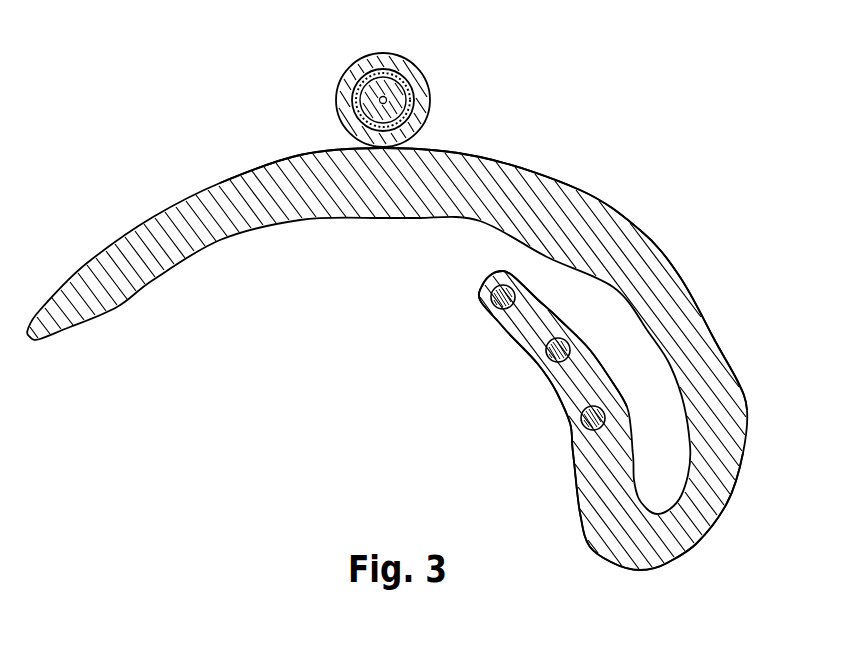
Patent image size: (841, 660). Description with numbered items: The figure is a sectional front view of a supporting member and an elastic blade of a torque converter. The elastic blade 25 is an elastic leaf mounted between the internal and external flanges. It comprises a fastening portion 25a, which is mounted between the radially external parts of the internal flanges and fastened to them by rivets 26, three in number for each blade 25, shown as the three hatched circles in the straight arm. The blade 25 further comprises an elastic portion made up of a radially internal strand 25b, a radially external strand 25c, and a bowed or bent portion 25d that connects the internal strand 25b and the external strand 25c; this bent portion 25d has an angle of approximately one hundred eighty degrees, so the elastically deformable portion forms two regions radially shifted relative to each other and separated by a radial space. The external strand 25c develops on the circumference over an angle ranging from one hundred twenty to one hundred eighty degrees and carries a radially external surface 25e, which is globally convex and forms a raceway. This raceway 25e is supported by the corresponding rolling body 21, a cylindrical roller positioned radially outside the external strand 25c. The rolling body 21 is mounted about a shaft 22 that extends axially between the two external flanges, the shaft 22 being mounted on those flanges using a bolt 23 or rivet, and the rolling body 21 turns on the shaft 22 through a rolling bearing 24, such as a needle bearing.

The rolling body 21 is at (397, 72).
The shaft 22 is at (427, 88).
The bolt 23 is at (355, 72).
The rolling bearing 24 is at (352, 67).
The elastic blade 25 is at (598, 195).
The fastening portion 25a is at (597, 380).
The radially internal strand 25b is at (600, 460).
The radially external strand 25c is at (647, 290).
The bowed portion 25d is at (638, 545).
The radially external surface 25e is at (457, 150).
The rivet 26 is at (580, 417).